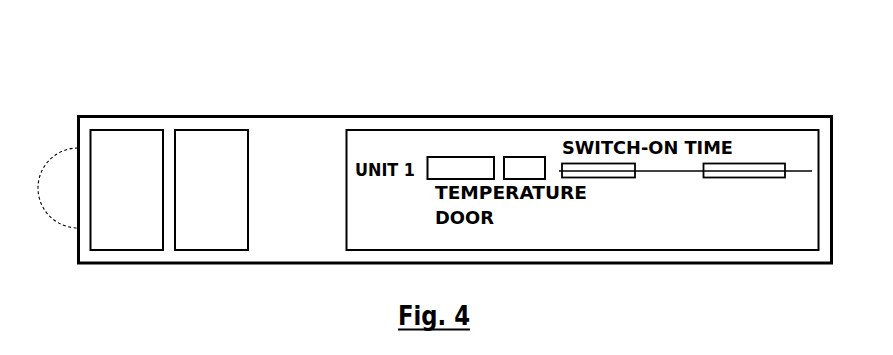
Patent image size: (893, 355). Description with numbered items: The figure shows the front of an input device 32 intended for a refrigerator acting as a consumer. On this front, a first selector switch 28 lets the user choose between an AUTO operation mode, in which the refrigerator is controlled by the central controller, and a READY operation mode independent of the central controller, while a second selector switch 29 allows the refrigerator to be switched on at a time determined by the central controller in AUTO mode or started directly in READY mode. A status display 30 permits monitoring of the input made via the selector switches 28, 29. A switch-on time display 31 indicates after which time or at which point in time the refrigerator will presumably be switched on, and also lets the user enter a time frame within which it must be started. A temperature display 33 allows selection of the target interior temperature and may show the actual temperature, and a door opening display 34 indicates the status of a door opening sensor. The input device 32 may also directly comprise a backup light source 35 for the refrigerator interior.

The first selector switch 28 is at (116, 143).
The second selector switch 29 is at (200, 143).
The status display 30 is at (462, 137).
The switch-on time display 31 is at (701, 155).
The input device 32 is at (837, 225).
The temperature display 33 is at (702, 198).
The door opening display 34 is at (697, 228).
The backup light source 35 is at (57, 150).